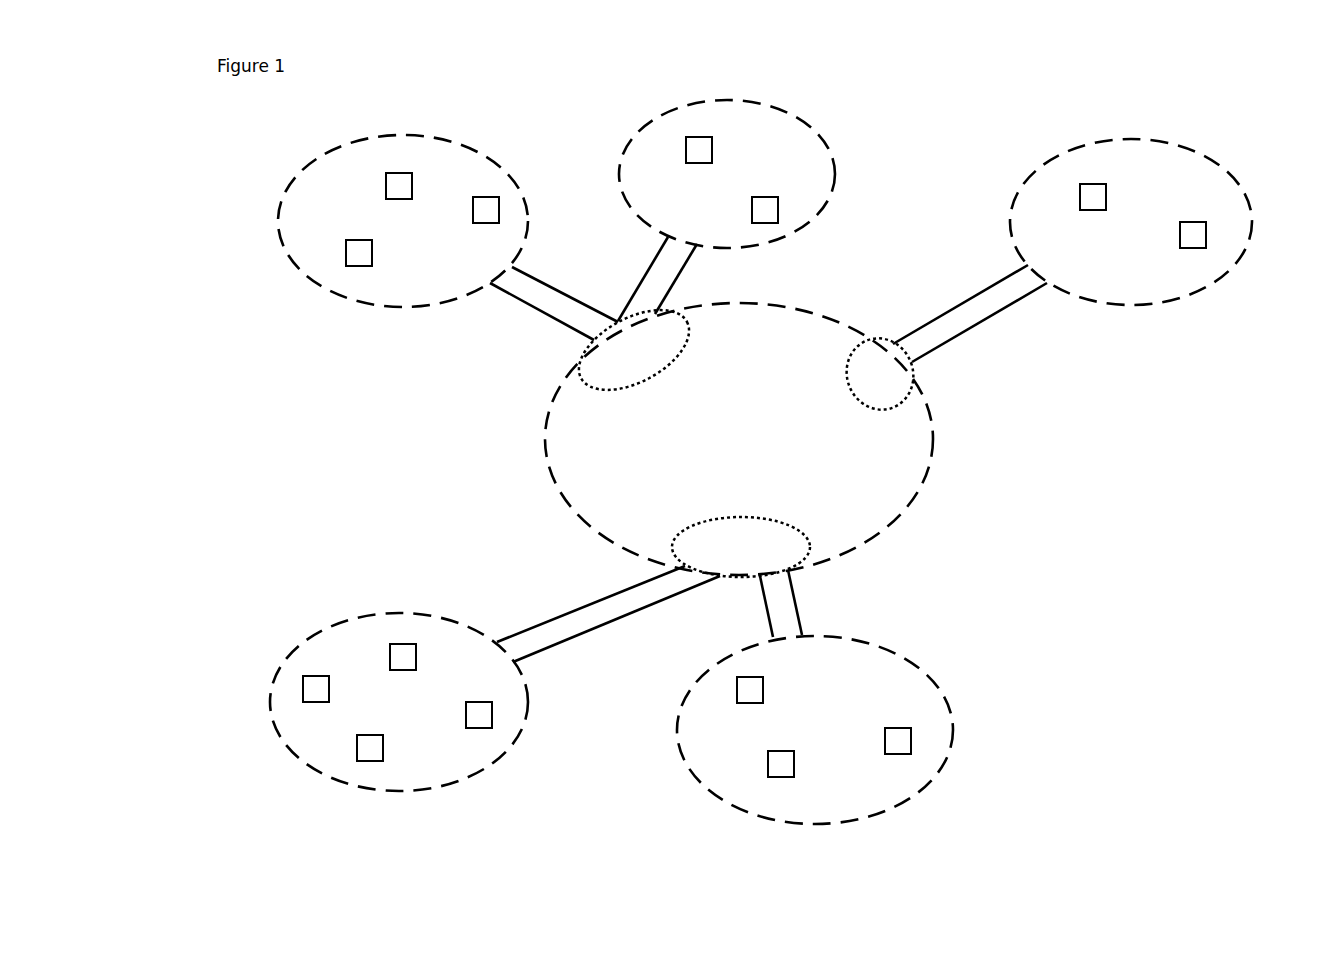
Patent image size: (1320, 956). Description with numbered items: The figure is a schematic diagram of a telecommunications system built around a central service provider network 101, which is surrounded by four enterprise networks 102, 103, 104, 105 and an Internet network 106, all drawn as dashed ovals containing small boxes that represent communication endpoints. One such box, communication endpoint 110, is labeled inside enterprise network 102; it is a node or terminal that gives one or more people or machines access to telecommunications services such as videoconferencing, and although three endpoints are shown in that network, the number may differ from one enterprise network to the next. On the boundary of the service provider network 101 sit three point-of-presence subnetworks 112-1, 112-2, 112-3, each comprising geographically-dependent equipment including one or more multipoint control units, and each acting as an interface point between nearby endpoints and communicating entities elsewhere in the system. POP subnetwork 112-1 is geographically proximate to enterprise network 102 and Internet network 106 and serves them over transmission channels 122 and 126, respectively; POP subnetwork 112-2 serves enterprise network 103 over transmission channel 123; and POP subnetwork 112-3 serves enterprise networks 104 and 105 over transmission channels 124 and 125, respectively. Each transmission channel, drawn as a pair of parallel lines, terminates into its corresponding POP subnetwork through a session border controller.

The service provider network 101 is at (739, 429).
The enterprise network 102 is at (403, 207).
The enterprise network 103 is at (1145, 216).
The enterprise network 104 is at (399, 690).
The enterprise network 105 is at (831, 726).
The Internet network 106 is at (761, 174).
The communication endpoint 110 is at (390, 246).
The point-of-presence subnetwork 112-1 is at (648, 351).
The point-of-presence subnetwork 112-2 is at (846, 374).
The point-of-presence subnetwork 112-3 is at (772, 534).
The transmission channel 122 is at (559, 299).
The transmission channel 123 is at (970, 306).
The transmission channel 124 is at (608, 614).
The transmission channel 125 is at (819, 603).
The transmission channel 126 is at (693, 279).